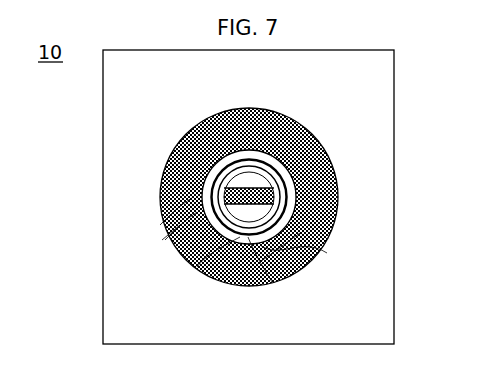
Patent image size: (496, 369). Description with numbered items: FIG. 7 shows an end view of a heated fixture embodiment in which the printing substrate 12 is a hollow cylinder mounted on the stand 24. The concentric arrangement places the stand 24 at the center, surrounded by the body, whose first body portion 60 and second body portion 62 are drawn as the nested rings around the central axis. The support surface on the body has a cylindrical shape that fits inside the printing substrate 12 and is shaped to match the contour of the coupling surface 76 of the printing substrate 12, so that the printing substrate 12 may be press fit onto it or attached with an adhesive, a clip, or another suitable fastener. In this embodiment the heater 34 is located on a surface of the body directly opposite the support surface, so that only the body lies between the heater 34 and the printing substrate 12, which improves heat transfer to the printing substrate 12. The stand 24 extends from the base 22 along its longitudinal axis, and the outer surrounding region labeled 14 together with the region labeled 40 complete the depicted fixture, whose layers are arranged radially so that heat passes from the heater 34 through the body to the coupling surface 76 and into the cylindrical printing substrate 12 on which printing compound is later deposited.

The jacket 14 is at (383, 103).
The outer layer 40 is at (327, 253).
The printing substrate 12 is at (302, 250).
The base 22 is at (272, 282).
The coupling surface 76 is at (197, 267).
The second body portion 62 is at (165, 240).
The heater 34 is at (160, 225).
The first body portion 60 is at (253, 182).
The stand 24 is at (242, 170).